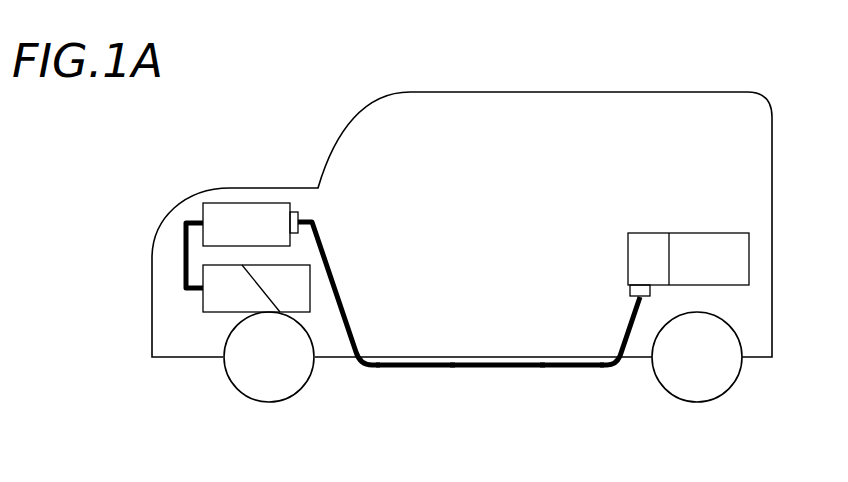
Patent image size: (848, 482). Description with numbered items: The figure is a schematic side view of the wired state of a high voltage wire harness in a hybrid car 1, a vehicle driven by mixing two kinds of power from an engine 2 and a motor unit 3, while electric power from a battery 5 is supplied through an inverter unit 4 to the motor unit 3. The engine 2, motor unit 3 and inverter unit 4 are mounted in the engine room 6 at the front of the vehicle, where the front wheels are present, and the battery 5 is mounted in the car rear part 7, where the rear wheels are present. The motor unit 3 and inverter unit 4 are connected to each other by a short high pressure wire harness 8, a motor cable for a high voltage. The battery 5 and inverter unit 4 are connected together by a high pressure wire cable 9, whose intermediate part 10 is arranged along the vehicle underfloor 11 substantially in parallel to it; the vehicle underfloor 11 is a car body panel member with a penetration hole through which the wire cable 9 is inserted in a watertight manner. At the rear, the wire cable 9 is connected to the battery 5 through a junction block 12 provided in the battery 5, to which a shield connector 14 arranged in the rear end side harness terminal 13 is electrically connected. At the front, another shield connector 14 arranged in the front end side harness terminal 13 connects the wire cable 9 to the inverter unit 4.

The hybrid car 1 is at (513, 87).
The engine 2 is at (297, 312).
The motor unit 3 is at (225, 312).
The inverter unit 4 is at (236, 218).
The battery 5 is at (716, 248).
The engine room 6 is at (168, 332).
The car rear part 7 is at (752, 320).
The high pressure wire harness 8 is at (183, 262).
The high pressure wire cable 9 is at (393, 372).
The intermediate part 10 is at (503, 369).
The vehicle underfloor 11 is at (562, 357).
The junction block 12 is at (650, 248).
The harness terminal 13 is at (313, 226).
The shield connector 14 is at (303, 216).